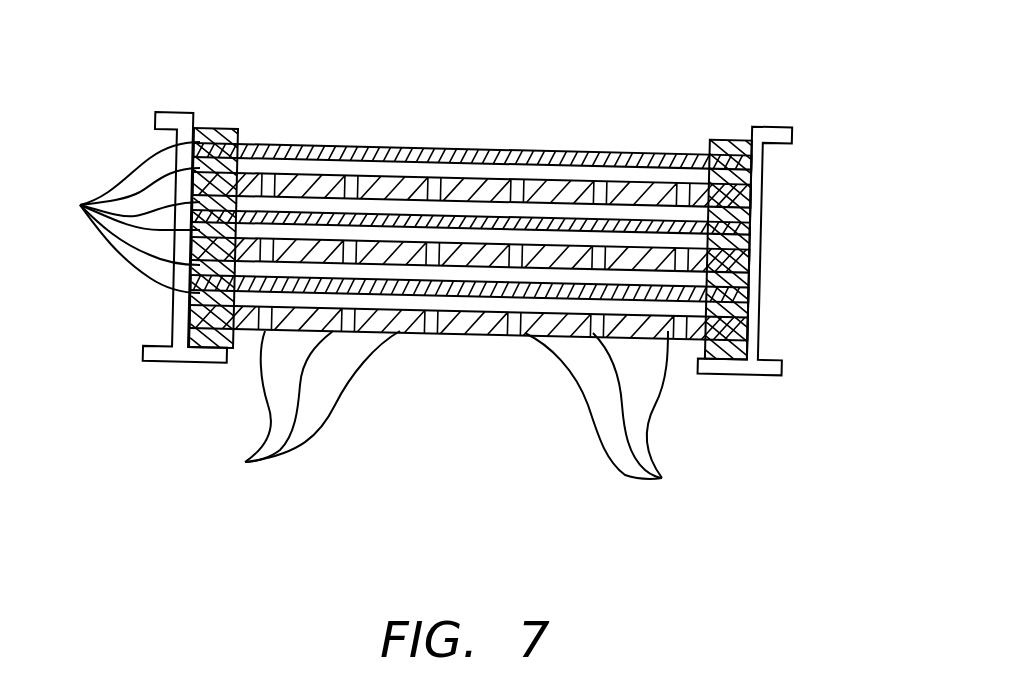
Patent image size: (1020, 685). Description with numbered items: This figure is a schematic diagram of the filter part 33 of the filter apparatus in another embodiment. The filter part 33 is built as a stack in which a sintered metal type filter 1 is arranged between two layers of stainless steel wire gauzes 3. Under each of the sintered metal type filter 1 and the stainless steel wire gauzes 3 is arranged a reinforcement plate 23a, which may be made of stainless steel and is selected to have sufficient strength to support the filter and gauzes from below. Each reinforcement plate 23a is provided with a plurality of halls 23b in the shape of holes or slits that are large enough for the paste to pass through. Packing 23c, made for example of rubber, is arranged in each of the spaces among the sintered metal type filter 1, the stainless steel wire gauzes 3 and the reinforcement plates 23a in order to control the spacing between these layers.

The filter part 33 is at (686, 100).
The stainless steel wire gauze 3 is at (752, 164).
The sintered metal type filter 1 is at (747, 225).
The reinforcement plate 23a is at (747, 198).
The halls 23b is at (452, 420).
The packing 23c is at (118, 217).